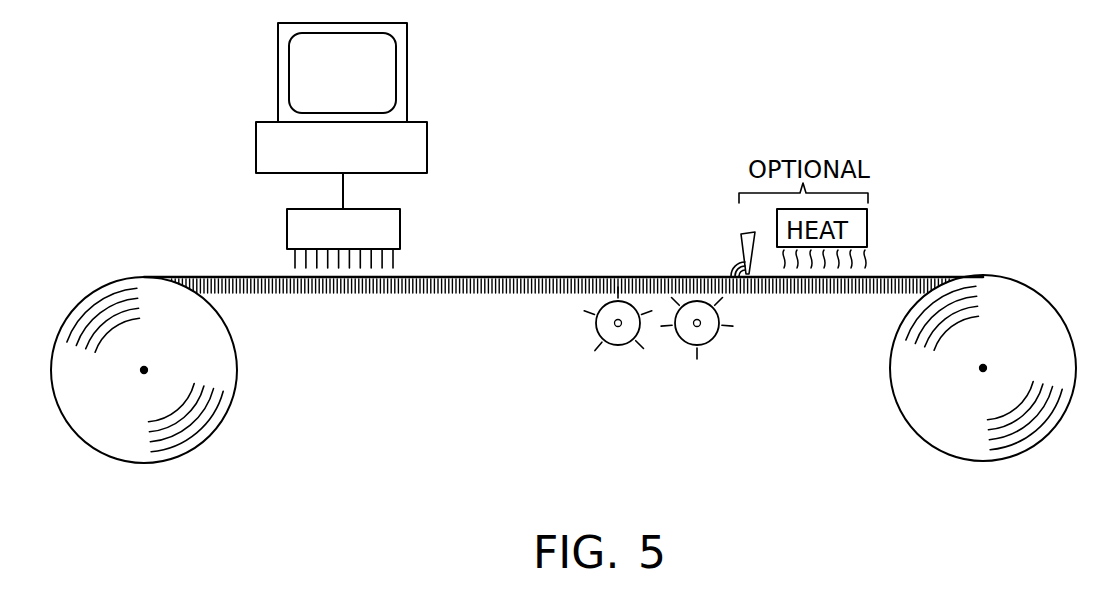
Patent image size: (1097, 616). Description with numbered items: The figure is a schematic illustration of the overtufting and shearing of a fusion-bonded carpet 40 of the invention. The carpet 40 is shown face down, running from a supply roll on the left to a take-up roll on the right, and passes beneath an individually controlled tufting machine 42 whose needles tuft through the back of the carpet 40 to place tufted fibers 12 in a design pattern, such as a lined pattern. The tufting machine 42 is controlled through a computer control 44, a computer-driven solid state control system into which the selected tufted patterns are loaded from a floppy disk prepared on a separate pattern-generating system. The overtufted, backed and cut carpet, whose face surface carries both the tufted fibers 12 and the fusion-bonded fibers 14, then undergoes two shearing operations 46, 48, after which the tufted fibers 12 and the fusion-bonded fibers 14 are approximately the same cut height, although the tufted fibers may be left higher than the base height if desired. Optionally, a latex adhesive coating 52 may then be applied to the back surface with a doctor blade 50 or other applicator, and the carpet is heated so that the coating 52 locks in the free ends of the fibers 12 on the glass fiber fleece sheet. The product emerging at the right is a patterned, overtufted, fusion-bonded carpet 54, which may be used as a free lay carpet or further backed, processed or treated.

The tufted fibers 12 is at (457, 292).
The fusion-bonded fibers 14 is at (360, 292).
The fusion-bonded carpet 40 is at (228, 367).
The tufting machine 42 is at (400, 226).
The computer control 44 is at (412, 72).
The shearing operation 46 is at (596, 334).
The shearing operation 48 is at (711, 337).
The doctor blade 50 is at (746, 234).
The latex adhesive coating 52 is at (734, 266).
The patterned, overtufted, fusion-bonded carpet 54 is at (897, 400).